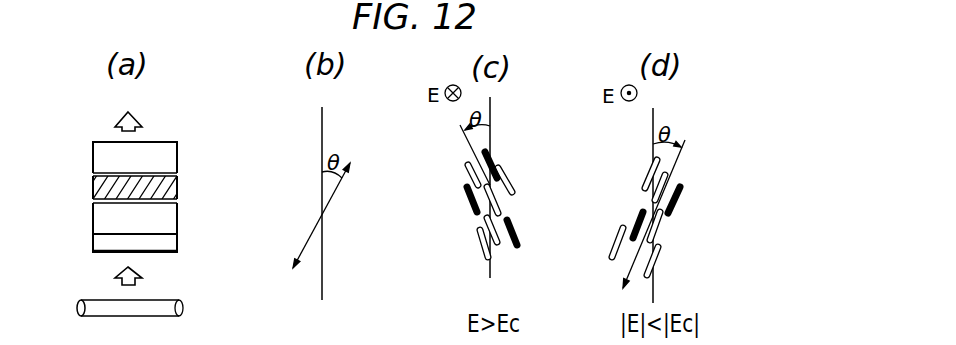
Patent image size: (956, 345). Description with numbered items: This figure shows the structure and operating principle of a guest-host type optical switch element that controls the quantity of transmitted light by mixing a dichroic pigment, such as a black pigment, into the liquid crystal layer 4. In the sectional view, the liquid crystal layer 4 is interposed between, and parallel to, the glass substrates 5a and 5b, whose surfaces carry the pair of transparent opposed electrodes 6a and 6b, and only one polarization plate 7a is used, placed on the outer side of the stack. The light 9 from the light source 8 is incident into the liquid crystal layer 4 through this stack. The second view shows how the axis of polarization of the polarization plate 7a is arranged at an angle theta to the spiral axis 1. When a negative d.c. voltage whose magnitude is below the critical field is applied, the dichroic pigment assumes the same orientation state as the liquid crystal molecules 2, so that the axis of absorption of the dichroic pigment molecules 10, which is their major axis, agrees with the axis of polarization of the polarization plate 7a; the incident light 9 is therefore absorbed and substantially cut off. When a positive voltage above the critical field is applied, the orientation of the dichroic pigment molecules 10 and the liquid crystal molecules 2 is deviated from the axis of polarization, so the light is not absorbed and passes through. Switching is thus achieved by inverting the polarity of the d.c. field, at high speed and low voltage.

The spiral axis 1 is at (322, 125).
The liquid crystal molecules 2 is at (512, 190).
The liquid crystal layer 4 is at (96, 190).
The glass substrate 5a is at (172, 162).
The glass substrate 5b is at (172, 220).
The transparent opposed electrode 6a is at (94, 173).
The transparent opposed electrode 6b is at (93, 203).
The polarization plate 7a is at (172, 244).
The light source 8 is at (184, 308).
The light 9 is at (138, 280).
The dichroic pigment molecules 10 is at (517, 236).